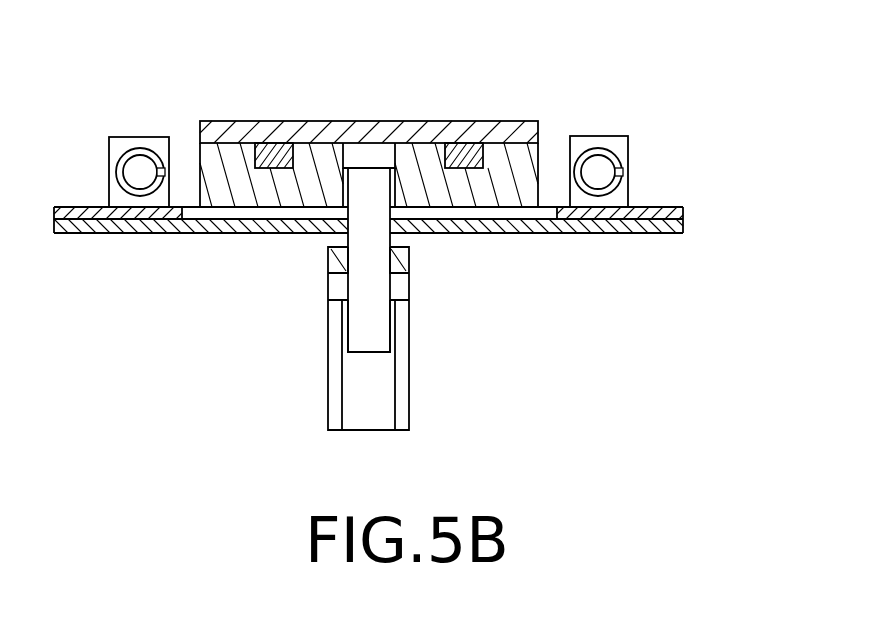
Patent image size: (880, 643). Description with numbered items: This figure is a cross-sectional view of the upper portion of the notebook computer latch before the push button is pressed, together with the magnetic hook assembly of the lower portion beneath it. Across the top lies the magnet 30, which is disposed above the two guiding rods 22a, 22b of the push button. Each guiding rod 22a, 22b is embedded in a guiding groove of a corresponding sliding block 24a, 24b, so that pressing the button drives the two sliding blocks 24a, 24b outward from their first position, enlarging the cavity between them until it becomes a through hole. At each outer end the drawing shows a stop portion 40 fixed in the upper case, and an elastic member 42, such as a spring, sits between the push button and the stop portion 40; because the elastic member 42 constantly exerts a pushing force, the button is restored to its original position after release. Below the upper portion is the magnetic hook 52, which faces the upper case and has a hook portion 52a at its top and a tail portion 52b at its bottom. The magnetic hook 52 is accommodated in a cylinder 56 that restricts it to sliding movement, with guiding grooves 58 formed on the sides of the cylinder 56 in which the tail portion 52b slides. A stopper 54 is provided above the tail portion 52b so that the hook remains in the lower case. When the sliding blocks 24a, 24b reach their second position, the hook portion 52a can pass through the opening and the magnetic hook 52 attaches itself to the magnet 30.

The stop portion 40 is at (123, 140).
The elastic member 42 is at (120, 167).
The magnet 30 is at (332, 132).
The sliding block 24a is at (515, 160).
The sliding block 24b is at (232, 160).
The guiding rod 22a is at (460, 155).
The guiding rod 22b is at (278, 155).
The hook portion 52a is at (372, 150).
The magnetic hook 52 is at (352, 242).
The tail portion 52b is at (377, 340).
The stopper 54 is at (400, 287).
The cylinder 56 is at (410, 413).
The guiding grooves 58 is at (335, 368).